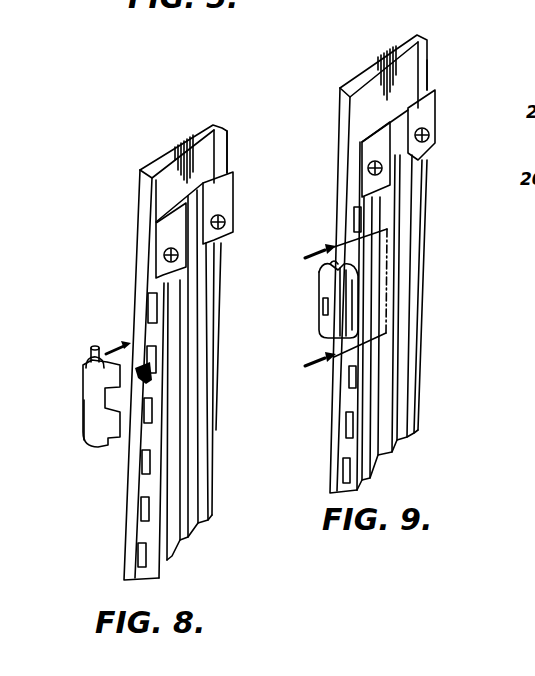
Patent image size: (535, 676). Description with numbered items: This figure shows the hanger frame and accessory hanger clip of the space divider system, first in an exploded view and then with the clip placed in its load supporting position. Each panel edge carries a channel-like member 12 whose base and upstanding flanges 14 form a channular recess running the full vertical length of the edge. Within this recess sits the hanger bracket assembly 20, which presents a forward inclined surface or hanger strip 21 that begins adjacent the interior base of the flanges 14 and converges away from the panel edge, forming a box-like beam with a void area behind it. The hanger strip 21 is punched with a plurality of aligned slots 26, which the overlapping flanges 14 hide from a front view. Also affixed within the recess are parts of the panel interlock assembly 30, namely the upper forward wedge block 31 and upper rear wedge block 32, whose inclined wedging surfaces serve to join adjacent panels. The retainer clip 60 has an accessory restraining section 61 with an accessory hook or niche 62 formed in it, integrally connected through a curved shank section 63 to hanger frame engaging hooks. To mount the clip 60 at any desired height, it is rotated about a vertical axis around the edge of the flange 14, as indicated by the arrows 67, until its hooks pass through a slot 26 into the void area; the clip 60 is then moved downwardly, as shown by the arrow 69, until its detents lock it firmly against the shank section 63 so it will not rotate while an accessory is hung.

In FIG. 8, the channel-like member 12 is at (178, 134).
In FIG. 9, the channel-like member 12 is at (374, 58).
In FIG. 8, the upstanding flange 14 is at (218, 126).
In FIG. 8, the hanger bracket assembly 20 is at (208, 271).
In FIG. 9, the hanger bracket assembly 20 is at (407, 217).
In FIG. 8, the forward inclined surface or hanger strip 21 is at (155, 392).
In FIG. 9, the forward inclined surface or hanger strip 21 is at (360, 360).
In FIG. 8, the slot 26 is at (145, 418).
In FIG. 8, the panel interlock assembly 30 is at (234, 176).
In FIG. 9, the panel interlock assembly 30 is at (441, 105).
In FIG. 8, the upper forward wedge block 31 is at (172, 215).
In FIG. 9, the upper forward wedge block 31 is at (380, 147).
In FIG. 8, the upper rear wedge block 32 is at (222, 133).
In FIG. 9, the upper rear wedge block 32 is at (423, 97).
In FIG. 8, the retainer clip 60 is at (79, 376).
In FIG. 9, the retainer clip 60 is at (308, 316).
In FIG. 8, the accessory restraining section 61 is at (95, 350).
In FIG. 9, the accessory restraining section 61 is at (316, 327).
In FIG. 8, the accessory hook or niche 62 is at (92, 356).
In FIG. 9, the accessory hook or niche 62 is at (327, 265).
In FIG. 8, the curved shank section 63 is at (92, 408).
In FIG. 9, the curved shank section 63 is at (357, 320).
In FIG. 8, the arrows indicating rotation 67 is at (124, 379).
In FIG. 9, the arrow indicating downward movement 69 is at (322, 297).